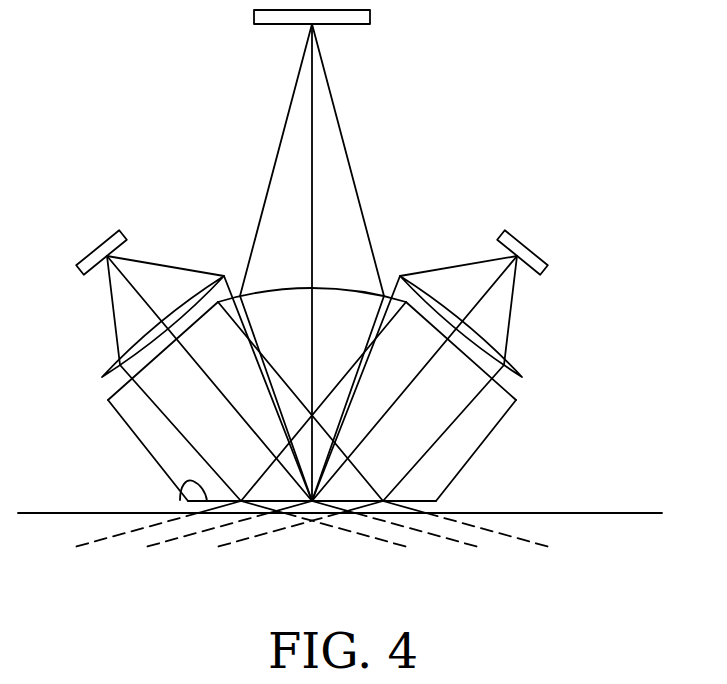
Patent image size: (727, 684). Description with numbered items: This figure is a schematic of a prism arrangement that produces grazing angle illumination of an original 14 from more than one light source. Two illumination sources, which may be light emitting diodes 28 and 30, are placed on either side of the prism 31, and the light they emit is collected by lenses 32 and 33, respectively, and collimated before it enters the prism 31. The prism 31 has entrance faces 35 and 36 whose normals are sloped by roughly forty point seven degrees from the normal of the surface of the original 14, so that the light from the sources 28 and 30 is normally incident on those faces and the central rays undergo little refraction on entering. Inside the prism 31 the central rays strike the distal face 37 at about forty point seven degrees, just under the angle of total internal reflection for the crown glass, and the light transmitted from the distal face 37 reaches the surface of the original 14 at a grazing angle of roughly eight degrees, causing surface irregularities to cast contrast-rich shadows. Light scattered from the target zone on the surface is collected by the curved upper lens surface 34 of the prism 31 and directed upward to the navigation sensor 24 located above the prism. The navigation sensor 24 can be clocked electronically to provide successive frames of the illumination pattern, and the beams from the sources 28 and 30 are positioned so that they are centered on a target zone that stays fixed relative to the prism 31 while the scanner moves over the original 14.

The original 14 is at (556, 512).
The navigation sensor 24 is at (371, 16).
The light emitting diode 28 is at (85, 262).
The light emitting diode 30 is at (538, 259).
The prism 31 is at (133, 438).
The lens 32 is at (138, 346).
The lens 33 is at (484, 346).
The upper lens surface 34 is at (343, 289).
The prism face 35 is at (110, 396).
The prism face 36 is at (512, 402).
The distal face 37 is at (180, 495).